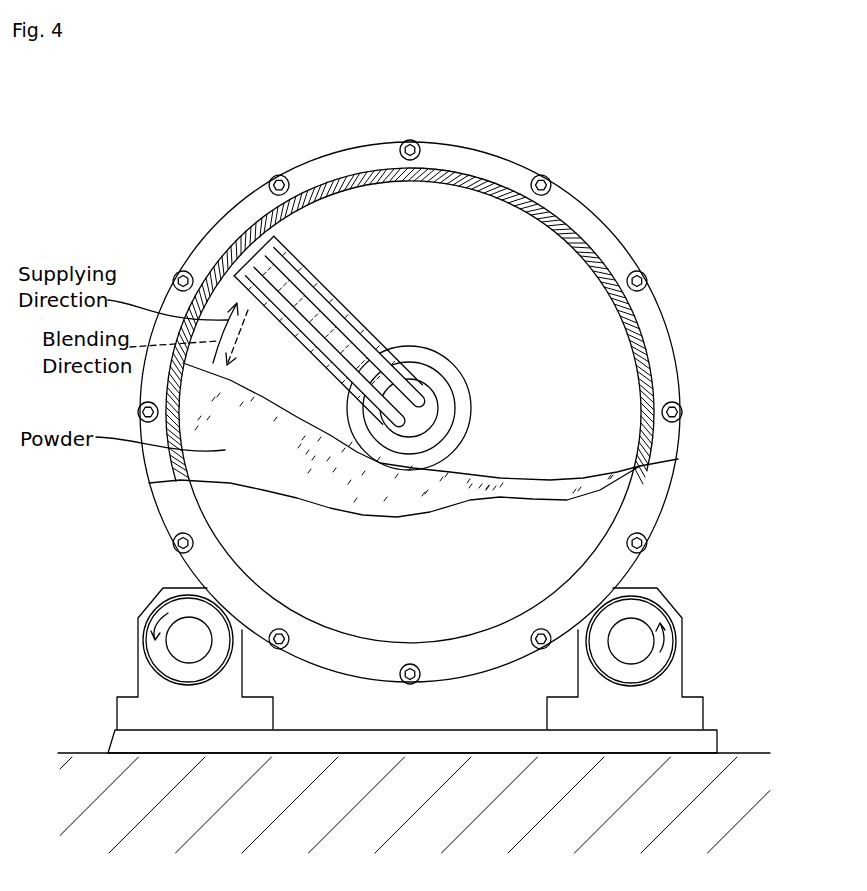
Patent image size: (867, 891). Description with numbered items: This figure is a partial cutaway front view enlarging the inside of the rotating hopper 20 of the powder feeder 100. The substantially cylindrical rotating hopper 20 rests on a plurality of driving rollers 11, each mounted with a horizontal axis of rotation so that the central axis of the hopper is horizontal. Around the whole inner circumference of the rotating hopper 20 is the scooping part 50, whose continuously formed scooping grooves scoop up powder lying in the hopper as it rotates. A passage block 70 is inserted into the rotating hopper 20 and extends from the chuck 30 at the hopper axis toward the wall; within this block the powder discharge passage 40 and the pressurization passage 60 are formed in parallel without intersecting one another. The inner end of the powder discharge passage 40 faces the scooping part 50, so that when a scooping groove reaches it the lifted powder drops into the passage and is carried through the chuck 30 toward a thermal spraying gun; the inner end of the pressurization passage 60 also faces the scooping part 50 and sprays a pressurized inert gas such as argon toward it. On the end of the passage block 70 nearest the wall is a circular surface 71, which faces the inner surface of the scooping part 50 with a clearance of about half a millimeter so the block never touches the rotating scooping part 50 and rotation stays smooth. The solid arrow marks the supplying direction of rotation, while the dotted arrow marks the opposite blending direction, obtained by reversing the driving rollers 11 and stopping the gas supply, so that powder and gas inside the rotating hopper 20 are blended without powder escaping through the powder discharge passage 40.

The powder feeder 100 is at (582, 168).
The rotating hopper 20 is at (683, 363).
The scooping part 50 is at (623, 356).
The circular surface 71 is at (231, 256).
The chuck 30 is at (440, 388).
The passage block 70 is at (343, 279).
The pressurization passage 60 is at (362, 336).
The powder discharge passage 40 is at (238, 262).
The driving roller 11 is at (183, 650).